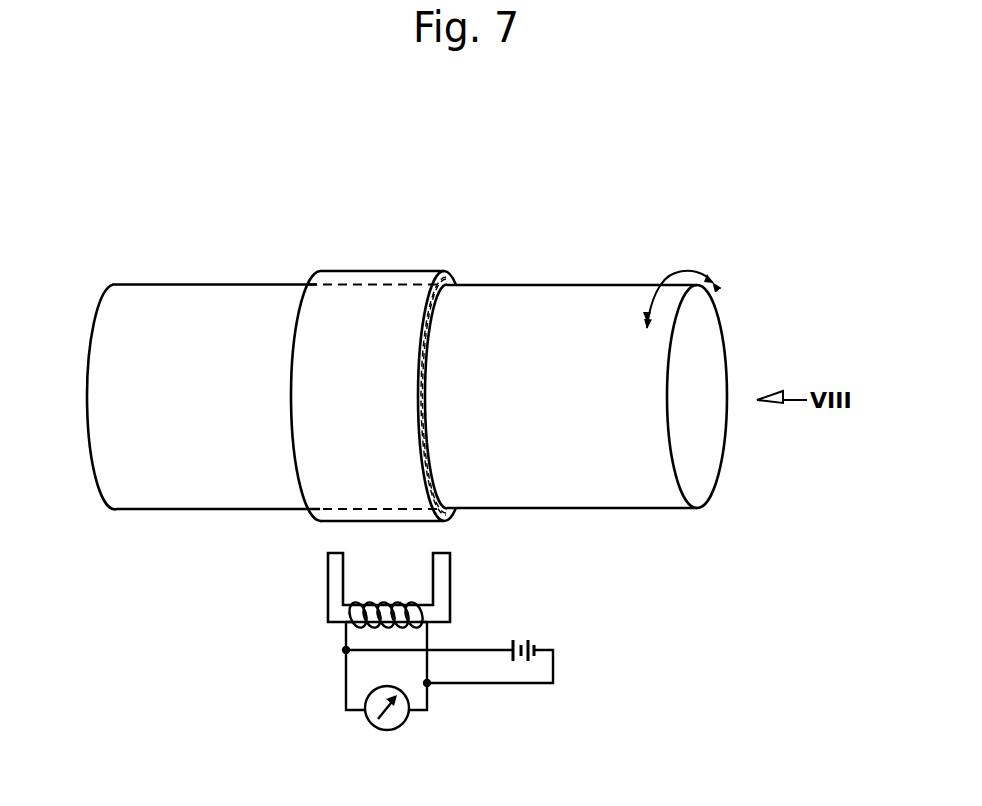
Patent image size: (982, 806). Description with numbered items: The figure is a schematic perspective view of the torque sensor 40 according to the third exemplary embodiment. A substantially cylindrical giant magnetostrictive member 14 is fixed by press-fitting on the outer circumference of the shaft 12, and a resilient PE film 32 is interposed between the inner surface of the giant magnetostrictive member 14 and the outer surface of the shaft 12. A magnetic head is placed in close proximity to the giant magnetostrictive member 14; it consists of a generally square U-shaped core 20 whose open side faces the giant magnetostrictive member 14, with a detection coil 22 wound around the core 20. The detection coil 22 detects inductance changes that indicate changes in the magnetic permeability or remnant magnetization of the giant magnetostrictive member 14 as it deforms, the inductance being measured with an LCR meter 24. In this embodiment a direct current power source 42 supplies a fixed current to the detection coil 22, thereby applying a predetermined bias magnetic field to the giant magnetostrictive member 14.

The shaft 12 is at (606, 298).
The giant magnetostrictive member 14 is at (423, 275).
The core 20 is at (447, 573).
The detection coil 22 is at (427, 637).
The LCR meter 24 is at (405, 722).
The resilient PE film 32 is at (432, 423).
The torque sensor 40 is at (417, 200).
The direct current power source 42 is at (536, 641).